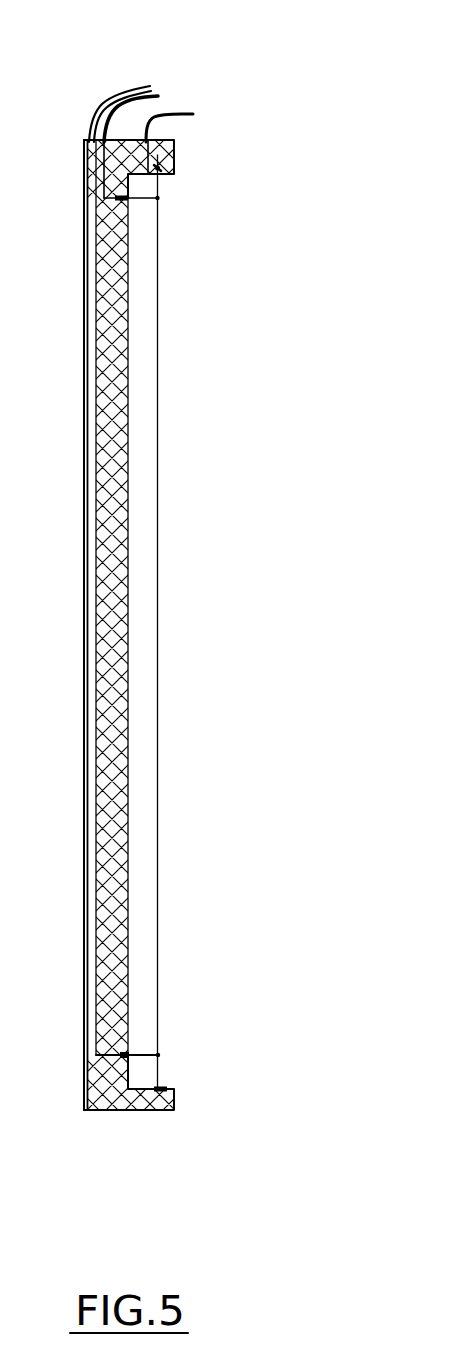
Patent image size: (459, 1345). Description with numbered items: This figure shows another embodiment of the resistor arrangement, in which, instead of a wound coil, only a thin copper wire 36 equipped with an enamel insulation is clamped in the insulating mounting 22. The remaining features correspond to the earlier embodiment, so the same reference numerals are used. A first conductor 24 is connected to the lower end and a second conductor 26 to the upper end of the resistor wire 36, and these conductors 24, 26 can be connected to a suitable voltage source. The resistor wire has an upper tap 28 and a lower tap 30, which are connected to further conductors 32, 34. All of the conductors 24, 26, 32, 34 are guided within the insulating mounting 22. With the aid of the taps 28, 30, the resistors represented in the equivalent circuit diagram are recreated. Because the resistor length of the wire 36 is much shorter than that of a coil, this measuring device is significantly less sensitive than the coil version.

The insulating mounting 22 is at (175, 151).
The first conductor 24 is at (108, 98).
The second conductor 26 is at (193, 112).
The upper tap 28 is at (150, 219).
The lower tap 30 is at (141, 1058).
The conductor 32 is at (163, 97).
The conductor 34 is at (160, 91).
The thin copper wire 36 is at (157, 512).